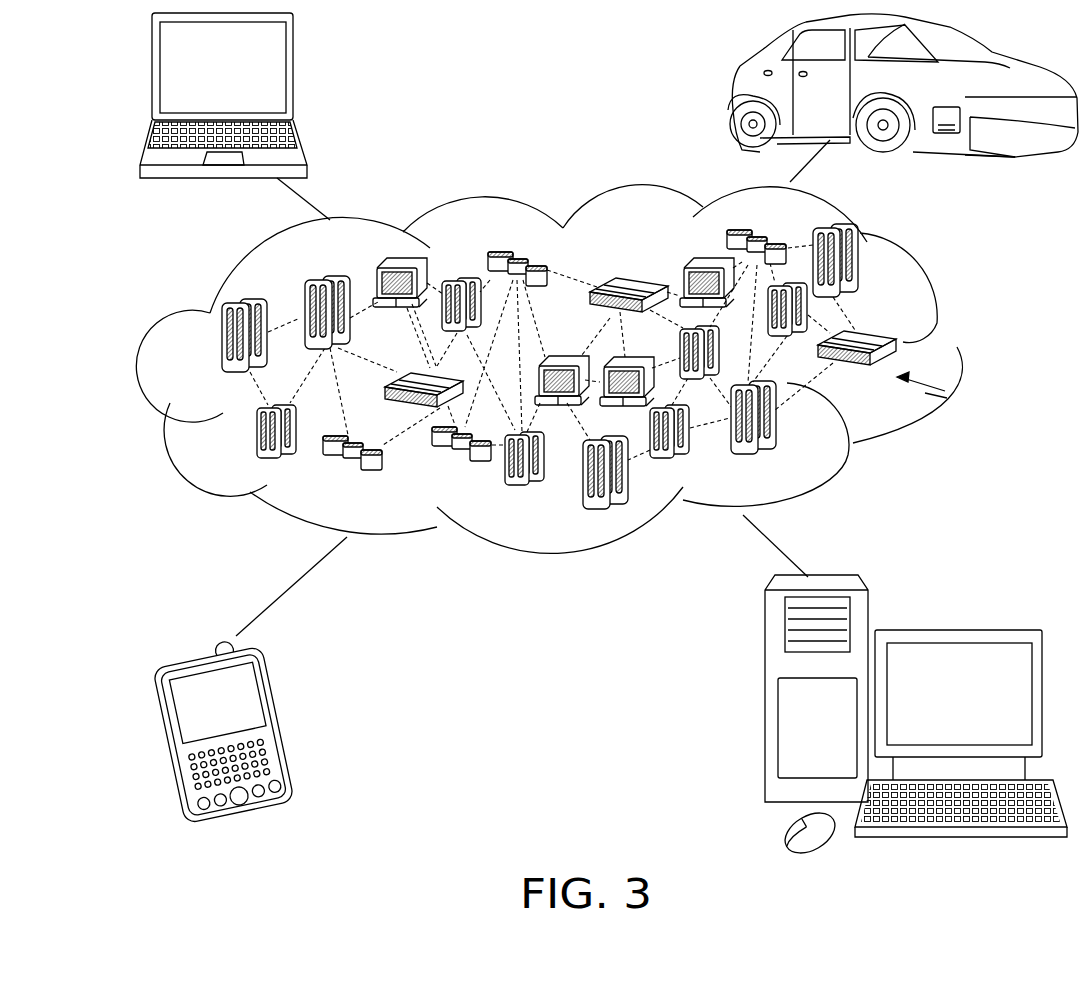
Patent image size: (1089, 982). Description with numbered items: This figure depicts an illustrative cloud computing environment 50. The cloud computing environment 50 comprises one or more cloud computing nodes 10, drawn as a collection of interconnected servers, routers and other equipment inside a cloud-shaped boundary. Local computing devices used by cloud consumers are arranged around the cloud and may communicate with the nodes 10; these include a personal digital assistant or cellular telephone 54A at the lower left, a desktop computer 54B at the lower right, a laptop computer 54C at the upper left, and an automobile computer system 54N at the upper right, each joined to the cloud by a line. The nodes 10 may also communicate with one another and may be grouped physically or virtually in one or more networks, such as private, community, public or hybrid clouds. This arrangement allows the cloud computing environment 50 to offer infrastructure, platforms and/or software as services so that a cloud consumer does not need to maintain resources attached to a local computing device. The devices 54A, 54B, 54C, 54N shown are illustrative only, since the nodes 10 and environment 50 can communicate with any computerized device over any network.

The cloud computing nodes 10 is at (938, 402).
The cloud computing environment 50 is at (957, 347).
The personal digital assistant or cellular telephone 54A is at (283, 723).
The desktop computer 54B is at (955, 628).
The laptop computer 54C is at (293, 76).
The automobile computer system 54N is at (738, 95).